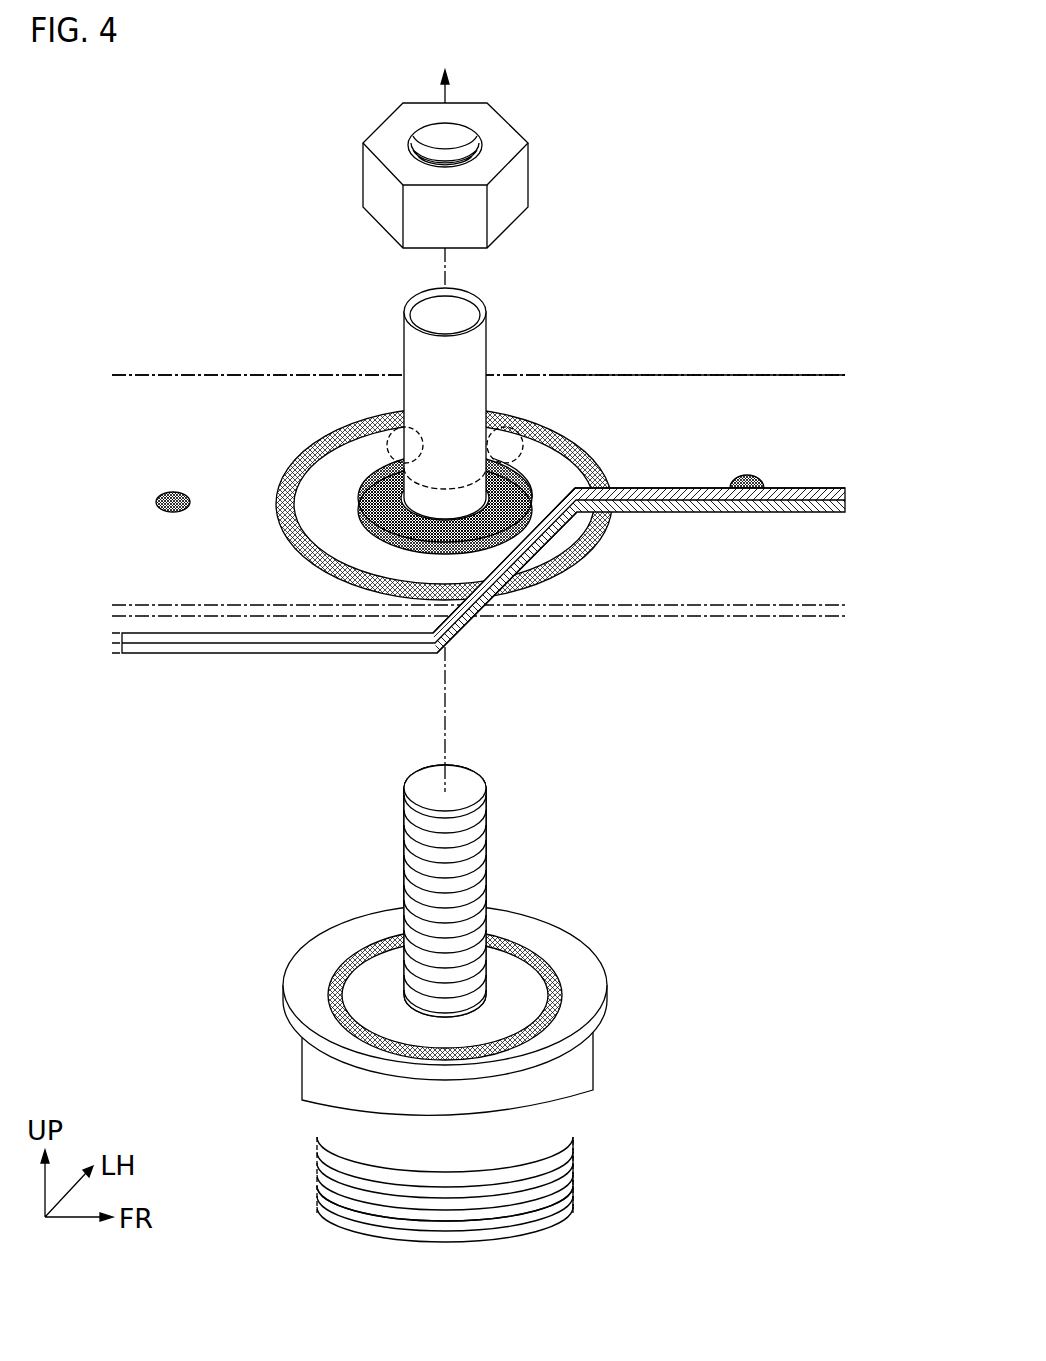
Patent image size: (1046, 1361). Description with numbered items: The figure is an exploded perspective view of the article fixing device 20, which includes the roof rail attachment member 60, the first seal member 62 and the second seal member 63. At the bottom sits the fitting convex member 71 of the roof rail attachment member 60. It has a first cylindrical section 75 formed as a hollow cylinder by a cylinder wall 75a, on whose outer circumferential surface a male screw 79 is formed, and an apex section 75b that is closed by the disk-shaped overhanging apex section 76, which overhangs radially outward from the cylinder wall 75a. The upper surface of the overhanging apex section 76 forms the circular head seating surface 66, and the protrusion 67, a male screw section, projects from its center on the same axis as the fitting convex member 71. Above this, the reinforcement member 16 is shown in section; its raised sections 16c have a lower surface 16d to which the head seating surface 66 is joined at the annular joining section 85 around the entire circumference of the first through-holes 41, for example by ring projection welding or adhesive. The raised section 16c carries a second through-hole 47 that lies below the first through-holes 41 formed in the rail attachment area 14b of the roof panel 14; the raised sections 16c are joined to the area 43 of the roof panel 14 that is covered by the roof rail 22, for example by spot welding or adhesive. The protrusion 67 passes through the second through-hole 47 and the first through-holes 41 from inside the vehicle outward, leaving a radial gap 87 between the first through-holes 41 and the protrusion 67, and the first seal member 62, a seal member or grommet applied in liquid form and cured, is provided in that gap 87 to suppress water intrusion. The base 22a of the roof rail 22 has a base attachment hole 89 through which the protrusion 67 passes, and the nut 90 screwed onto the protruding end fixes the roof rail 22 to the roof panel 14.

The nut 90 is at (499, 125).
The protrusion 67 is at (488, 345).
The base 22a is at (188, 366).
The roof rail 22 is at (478, 308).
The roof panel 14 is at (780, 400).
The rail attachment area 14b is at (647, 417).
The second seal member 63 is at (340, 427).
The base attachment hole 89 is at (388, 437).
The first seal member 62 is at (358, 507).
The gap 87 is at (407, 520).
The second through-hole 47 is at (520, 478).
The first through-holes 41 is at (502, 456).
The area 43 is at (166, 492).
The reinforcement member 16 is at (478, 580).
The raised sections 16c is at (695, 487).
The lower surface 16d is at (527, 560).
The article fixing device 20 is at (472, 1035).
The roof rail attachment member 60 is at (472, 1102).
The head seating surface 66 is at (317, 953).
The joining section 85 is at (328, 997).
The overhanging apex section 76 is at (292, 1038).
The apex section 75b is at (320, 1088).
The first cylindrical section 75 is at (408, 1221).
The cylinder wall 75a is at (408, 1232).
The male screw 79 is at (502, 1227).
The fitting convex member 71 is at (585, 1175).